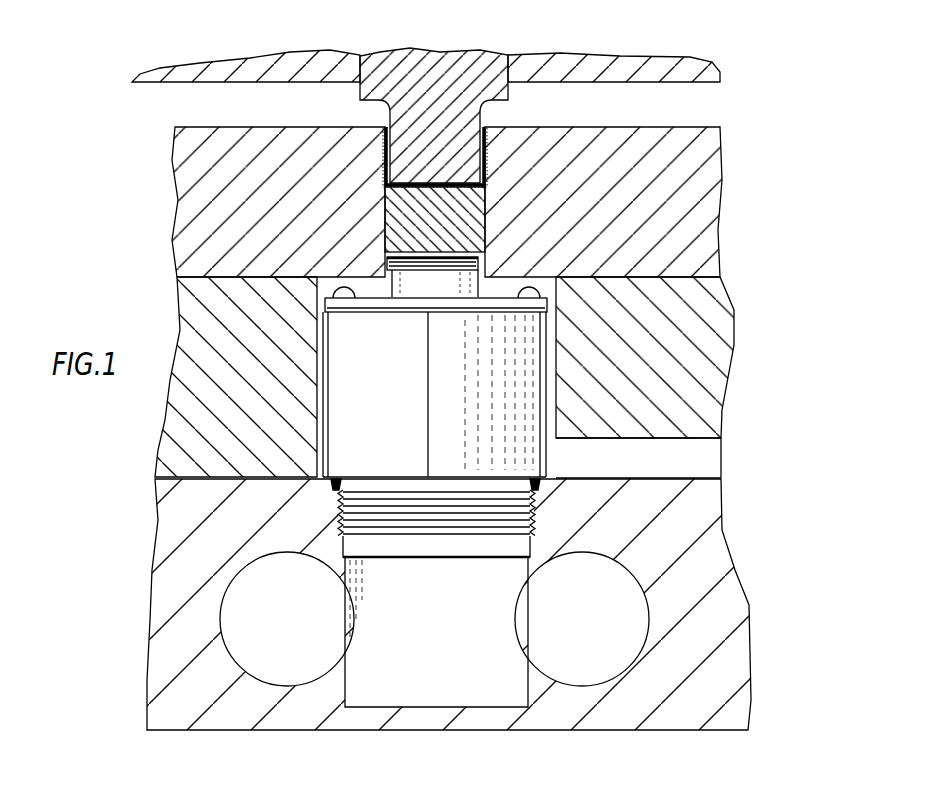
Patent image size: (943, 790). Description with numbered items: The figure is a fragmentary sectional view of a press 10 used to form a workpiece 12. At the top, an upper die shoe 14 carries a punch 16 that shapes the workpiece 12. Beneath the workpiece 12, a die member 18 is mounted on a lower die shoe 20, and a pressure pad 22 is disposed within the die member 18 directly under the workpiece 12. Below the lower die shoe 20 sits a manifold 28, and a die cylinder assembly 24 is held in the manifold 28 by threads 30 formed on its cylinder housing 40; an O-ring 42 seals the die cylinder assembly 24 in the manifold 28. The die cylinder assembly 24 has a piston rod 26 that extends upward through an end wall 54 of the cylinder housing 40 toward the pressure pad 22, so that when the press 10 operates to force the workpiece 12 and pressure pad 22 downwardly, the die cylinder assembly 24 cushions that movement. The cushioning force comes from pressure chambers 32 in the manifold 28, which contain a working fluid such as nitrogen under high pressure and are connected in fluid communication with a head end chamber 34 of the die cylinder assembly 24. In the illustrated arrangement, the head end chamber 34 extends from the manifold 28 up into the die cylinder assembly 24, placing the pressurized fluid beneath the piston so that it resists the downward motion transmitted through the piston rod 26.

The press 10 is at (755, 124).
The workpiece 12 is at (490, 143).
The upper die shoe 14 is at (587, 68).
The punch 16 is at (453, 76).
The die member 18 is at (692, 188).
The lower die shoe 20 is at (697, 348).
The pressure pad 22 is at (462, 222).
The die cylinder assembly 24 is at (553, 451).
The piston rod 26 is at (403, 282).
The manifold 28 is at (678, 530).
The threads 30 is at (530, 512).
The pressure chambers 32 is at (577, 660).
The head end chamber 34 is at (452, 657).
The cylinder housing 40 is at (527, 372).
The O-ring 42 is at (332, 483).
The end wall 54 is at (530, 285).